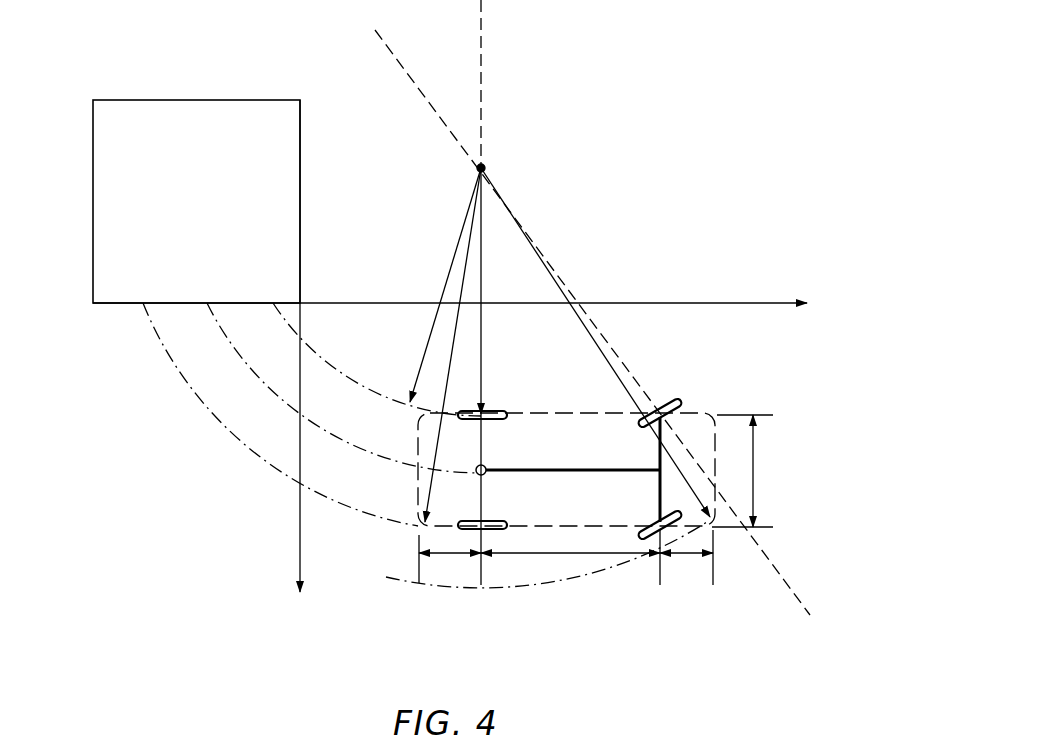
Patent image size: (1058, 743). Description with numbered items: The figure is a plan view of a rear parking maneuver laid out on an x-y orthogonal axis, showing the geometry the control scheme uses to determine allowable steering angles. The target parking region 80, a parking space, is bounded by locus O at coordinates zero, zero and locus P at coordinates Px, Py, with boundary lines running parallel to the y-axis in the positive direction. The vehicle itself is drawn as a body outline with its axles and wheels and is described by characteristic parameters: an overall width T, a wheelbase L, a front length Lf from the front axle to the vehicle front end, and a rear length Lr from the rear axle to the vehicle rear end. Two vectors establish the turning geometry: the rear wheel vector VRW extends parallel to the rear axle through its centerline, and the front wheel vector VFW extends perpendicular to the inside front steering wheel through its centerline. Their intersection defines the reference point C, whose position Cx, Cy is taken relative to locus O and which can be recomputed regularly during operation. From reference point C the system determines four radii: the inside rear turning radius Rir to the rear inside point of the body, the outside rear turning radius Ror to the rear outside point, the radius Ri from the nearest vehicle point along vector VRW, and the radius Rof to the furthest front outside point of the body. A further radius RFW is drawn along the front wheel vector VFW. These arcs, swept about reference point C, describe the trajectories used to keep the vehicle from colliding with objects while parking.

The target parking region 80 is at (196, 201).
The locus O is at (450, 346).
The locus P is at (231, 414).
The reference point C is at (536, 161).
The rear wheel vector VRW is at (482, 75).
The front wheel vector VFW is at (418, 88).
The inside rear turning radius Rir is at (420, 368).
The outside rear turning radius Ror is at (435, 448).
The nearest-point vehicle radius Ri is at (484, 353).
The outside front vehicle radius Rof is at (595, 350).
The front wheel turning radius RFW is at (640, 378).
The overall width T is at (755, 472).
The rear length Lr is at (452, 555).
The wheelbase L is at (572, 555).
The front length Lf is at (687, 555).